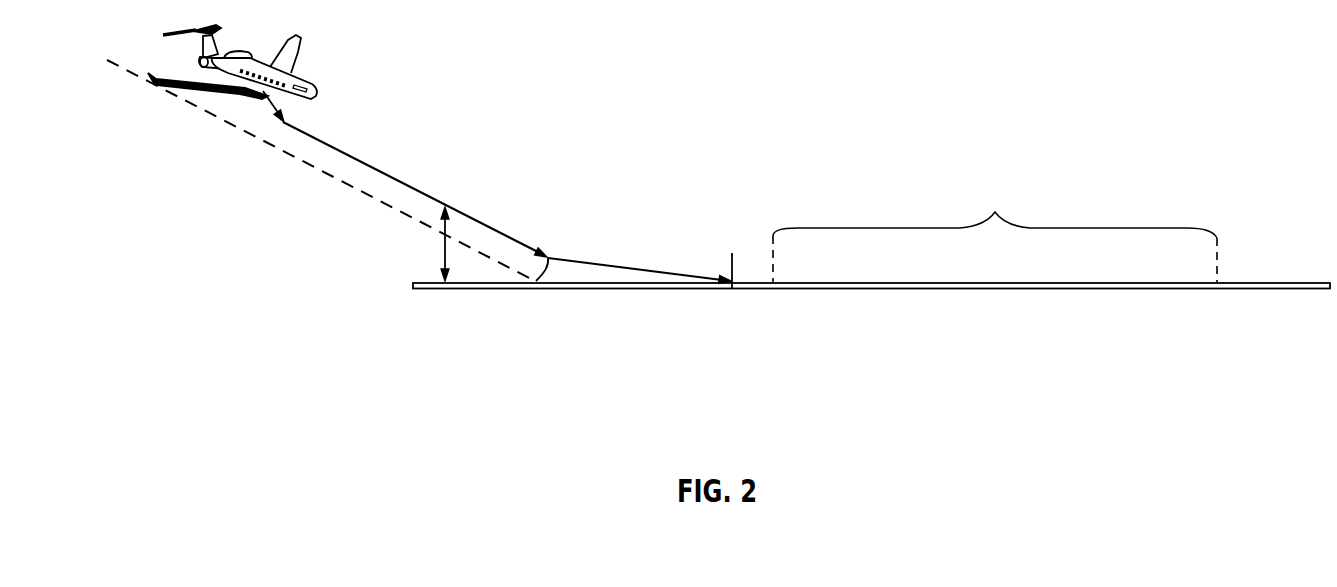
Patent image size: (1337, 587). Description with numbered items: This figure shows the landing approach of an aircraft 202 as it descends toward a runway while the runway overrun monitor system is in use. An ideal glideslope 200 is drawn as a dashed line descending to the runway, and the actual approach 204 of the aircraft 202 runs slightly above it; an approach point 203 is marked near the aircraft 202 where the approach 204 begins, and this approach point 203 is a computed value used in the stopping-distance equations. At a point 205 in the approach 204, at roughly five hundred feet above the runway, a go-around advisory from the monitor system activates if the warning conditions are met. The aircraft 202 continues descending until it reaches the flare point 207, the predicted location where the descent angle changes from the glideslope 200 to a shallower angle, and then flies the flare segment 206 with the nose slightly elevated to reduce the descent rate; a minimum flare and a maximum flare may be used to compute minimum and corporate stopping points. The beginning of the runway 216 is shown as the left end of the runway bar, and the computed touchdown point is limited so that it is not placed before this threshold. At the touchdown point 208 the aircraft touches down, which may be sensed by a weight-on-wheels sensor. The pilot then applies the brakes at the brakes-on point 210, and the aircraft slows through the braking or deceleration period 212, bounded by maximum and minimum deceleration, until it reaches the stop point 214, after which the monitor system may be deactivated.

The glideslope 200 is at (237, 125).
The aircraft 202 is at (297, 77).
The approach point 203 is at (285, 122).
The approach 204 is at (397, 178).
The point in approach 205 is at (442, 248).
The beginning of the runway 216 is at (428, 280).
The flare point 207 is at (536, 281).
The flare segment 206 is at (625, 269).
The touchdown point 208 is at (732, 290).
The brakes-on point 210 is at (773, 289).
The braking (deceleration) period 212 is at (1032, 318).
The stop point 214 is at (1217, 289).